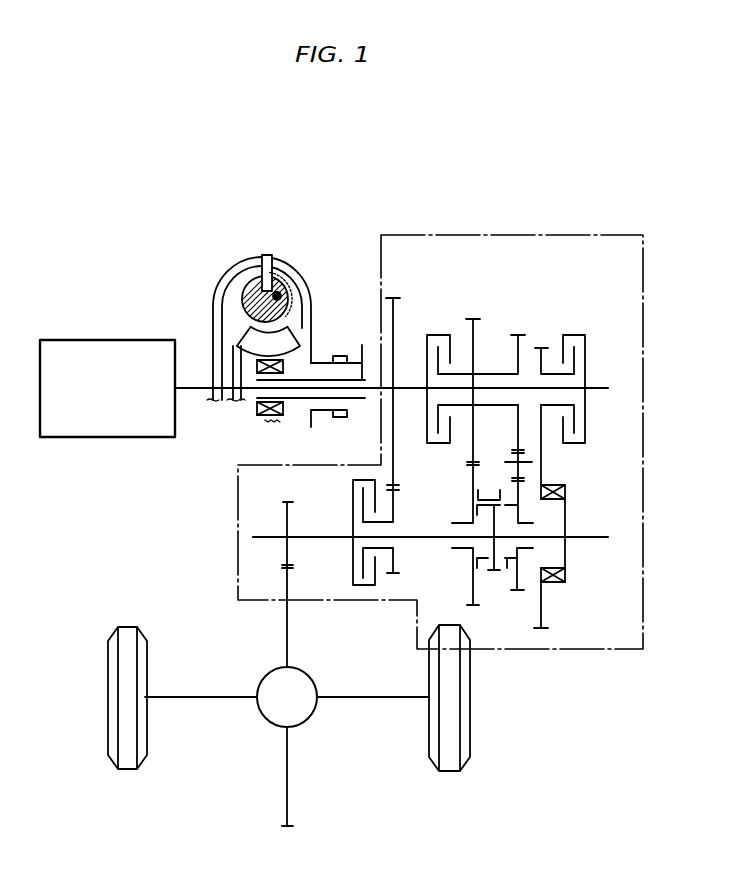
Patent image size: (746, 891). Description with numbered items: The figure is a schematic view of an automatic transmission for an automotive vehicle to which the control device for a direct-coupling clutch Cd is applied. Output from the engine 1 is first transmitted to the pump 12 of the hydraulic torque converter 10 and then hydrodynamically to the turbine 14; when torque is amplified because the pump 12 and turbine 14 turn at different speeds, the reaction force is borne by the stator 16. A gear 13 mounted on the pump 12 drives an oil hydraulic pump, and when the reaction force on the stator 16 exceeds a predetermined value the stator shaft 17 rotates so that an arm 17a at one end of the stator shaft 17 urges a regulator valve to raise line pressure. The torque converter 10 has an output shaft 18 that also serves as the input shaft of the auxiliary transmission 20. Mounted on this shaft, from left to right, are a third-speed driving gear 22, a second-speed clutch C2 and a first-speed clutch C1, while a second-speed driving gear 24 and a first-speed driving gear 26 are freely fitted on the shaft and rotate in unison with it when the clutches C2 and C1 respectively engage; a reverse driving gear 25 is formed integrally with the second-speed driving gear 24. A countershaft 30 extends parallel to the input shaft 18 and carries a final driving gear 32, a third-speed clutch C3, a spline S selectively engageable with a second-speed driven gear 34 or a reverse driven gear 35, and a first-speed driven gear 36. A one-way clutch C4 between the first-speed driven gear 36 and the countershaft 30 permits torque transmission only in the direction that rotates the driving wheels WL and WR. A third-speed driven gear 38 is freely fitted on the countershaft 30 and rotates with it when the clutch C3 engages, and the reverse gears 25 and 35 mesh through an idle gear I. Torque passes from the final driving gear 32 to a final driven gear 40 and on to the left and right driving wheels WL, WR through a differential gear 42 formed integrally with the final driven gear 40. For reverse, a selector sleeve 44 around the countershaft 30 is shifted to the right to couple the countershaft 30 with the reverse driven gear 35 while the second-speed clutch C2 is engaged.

The engine 1 is at (113, 340).
The hydraulic torque converter 10 is at (286, 328).
The pump 12 is at (296, 279).
The gear 13 is at (339, 356).
The turbine 14 is at (233, 264).
The stator 16 is at (244, 350).
The stator shaft 17 is at (317, 377).
The arm 17a is at (362, 343).
The output shaft 18 is at (293, 399).
The auxiliary transmission 20 is at (607, 228).
The third-speed driving gear 22 is at (394, 318).
The second-speed driving gear 24 is at (475, 336).
The reverse driving gear 25 is at (523, 348).
The first-speed driving gear 26 is at (544, 357).
The countershaft 30 is at (262, 536).
The final driving gear 32 is at (290, 510).
The second-speed driven gear 34 is at (472, 480).
The reverse driven gear 35 is at (521, 570).
The first-speed driven gear 36 is at (543, 473).
The third-speed driven gear 38 is at (399, 572).
The final driven gear 40 is at (288, 625).
The differential gear 42 is at (294, 723).
The selector sleeve 44 is at (489, 584).
The first-speed clutch C1 is at (586, 352).
The second-speed clutch C2 is at (438, 336).
The third-speed clutch C3 is at (353, 565).
The one-way clutch C4 is at (551, 583).
The direct-coupling clutch Cd is at (255, 270).
The idle gear I is at (516, 452).
The spline S is at (488, 543).
The left driving wheel WL is at (133, 770).
The right driving wheel WR is at (452, 772).